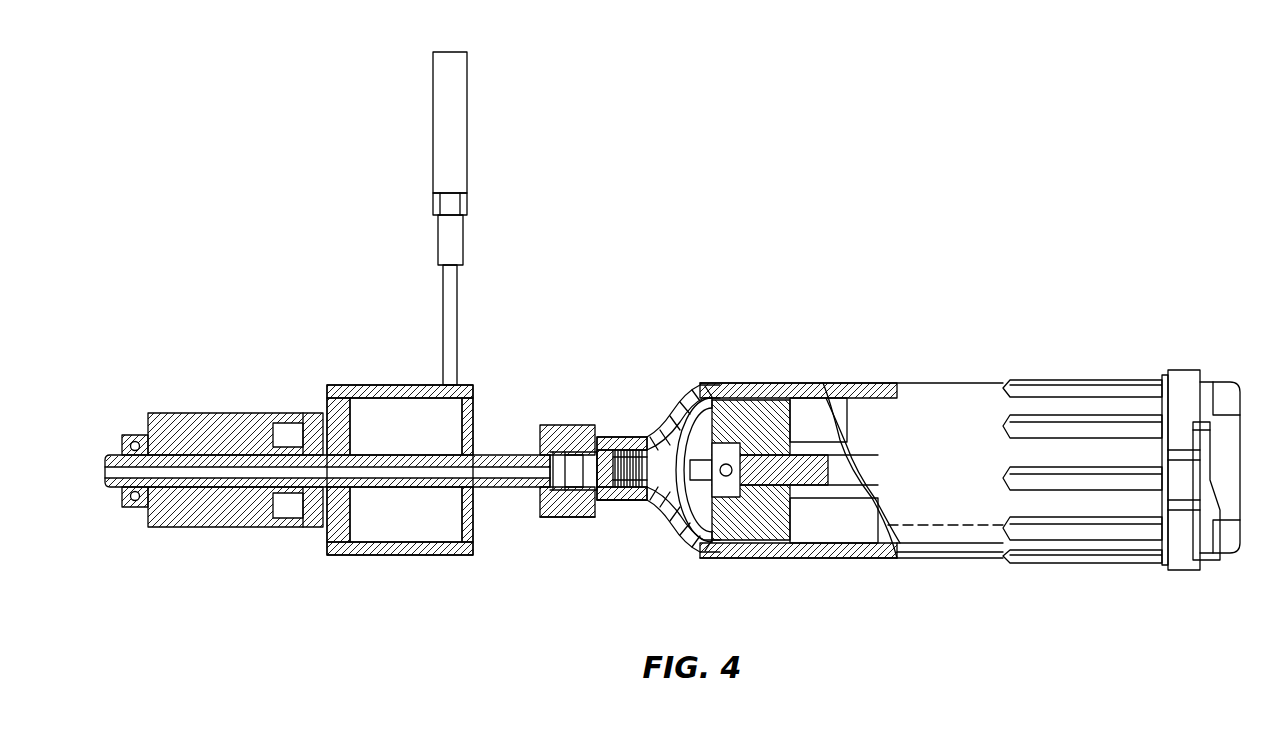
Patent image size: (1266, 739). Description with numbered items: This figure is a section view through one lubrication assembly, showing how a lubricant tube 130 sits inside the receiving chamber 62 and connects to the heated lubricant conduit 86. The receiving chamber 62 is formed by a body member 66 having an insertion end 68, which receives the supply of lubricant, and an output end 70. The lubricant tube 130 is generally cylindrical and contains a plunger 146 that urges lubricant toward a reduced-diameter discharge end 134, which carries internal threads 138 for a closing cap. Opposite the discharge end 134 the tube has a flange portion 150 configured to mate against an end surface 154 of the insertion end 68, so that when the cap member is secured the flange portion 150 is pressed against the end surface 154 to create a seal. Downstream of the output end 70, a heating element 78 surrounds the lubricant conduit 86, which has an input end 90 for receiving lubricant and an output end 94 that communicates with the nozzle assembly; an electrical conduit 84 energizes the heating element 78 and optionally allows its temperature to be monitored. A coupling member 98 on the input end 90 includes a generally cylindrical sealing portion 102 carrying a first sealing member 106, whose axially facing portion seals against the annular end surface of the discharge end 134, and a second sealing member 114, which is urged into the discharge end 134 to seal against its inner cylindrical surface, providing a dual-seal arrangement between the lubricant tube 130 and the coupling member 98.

The receiving chamber 62 is at (943, 532).
The body member 66 is at (790, 385).
The insertion end 68 is at (1218, 388).
The output end 70 is at (636, 400).
The heating element 78 is at (190, 412).
The electrical conduit 84 is at (458, 147).
The lubricant conduit 86 is at (405, 453).
The input end 90 is at (530, 488).
The output end 94 is at (110, 452).
The coupling member 98 is at (545, 425).
The sealing portion 102 is at (583, 400).
The first sealing member 106 is at (557, 517).
The second sealing member 114 is at (610, 503).
The lubricant tube 130 is at (712, 386).
The discharge end 134 is at (623, 505).
The internal threads 138 is at (614, 400).
The plunger 146 is at (690, 530).
The flange portion 150 is at (1238, 388).
The end surface 154 is at (1240, 556).